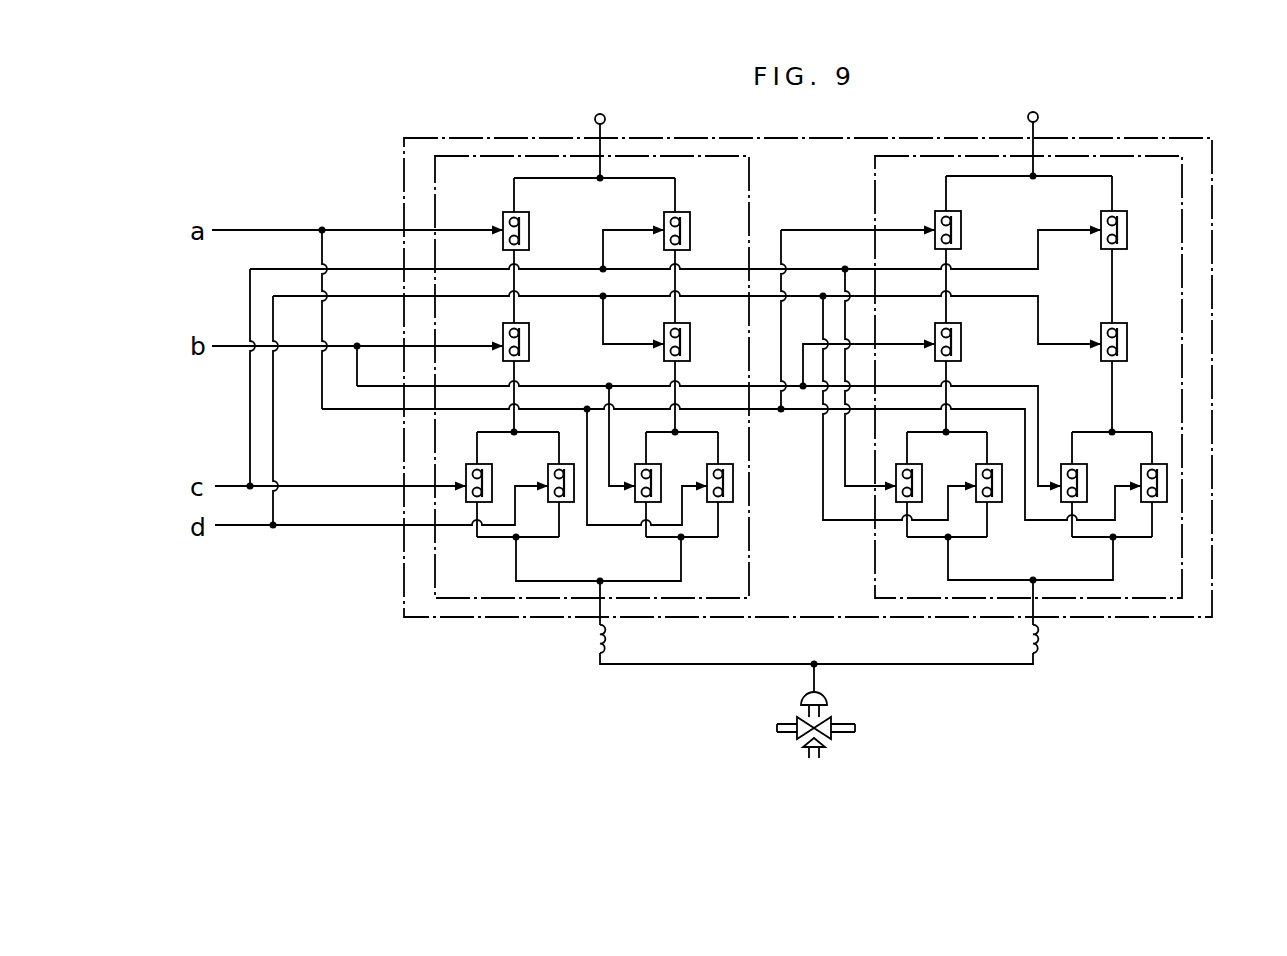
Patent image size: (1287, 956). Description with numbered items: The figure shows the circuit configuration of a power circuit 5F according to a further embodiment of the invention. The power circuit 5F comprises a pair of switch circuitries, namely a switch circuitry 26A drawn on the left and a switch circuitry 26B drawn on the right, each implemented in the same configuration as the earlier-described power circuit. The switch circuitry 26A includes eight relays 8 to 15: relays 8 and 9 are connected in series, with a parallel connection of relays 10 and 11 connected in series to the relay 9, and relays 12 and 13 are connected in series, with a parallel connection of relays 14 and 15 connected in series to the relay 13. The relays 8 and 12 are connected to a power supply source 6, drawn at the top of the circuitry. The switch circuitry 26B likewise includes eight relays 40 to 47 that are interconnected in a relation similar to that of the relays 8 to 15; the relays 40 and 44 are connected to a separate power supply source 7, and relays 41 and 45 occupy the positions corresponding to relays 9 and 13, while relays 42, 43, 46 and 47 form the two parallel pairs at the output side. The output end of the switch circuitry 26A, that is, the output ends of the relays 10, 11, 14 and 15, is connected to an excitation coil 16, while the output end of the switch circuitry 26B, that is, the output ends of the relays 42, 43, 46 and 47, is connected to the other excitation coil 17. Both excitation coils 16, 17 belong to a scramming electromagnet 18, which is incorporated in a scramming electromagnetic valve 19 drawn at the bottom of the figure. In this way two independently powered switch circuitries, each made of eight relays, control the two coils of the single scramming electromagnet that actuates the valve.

The power circuit 5F is at (1148, 134).
The power supply source 6 is at (606, 117).
The power supply source 7 is at (1039, 115).
The relay 8 is at (529, 237).
The relay 9 is at (529, 348).
The relay 10 is at (466, 468).
The relay 11 is at (548, 471).
The relay 12 is at (690, 237).
The relay 13 is at (690, 348).
The relay 14 is at (635, 468).
The relay 15 is at (707, 471).
The excitation coil 16 is at (597, 637).
The excitation coil 17 is at (1038, 637).
The scramming electromagnet 18 is at (826, 699).
The scramming electromagnetic valve 19 is at (823, 748).
The switch circuitry 26A is at (752, 197).
The switch circuitry 26B is at (1186, 197).
The relay 40 is at (961, 236).
The relay 41 is at (962, 348).
The relay 42 is at (923, 478).
The relay 43 is at (987, 463).
The relay 44 is at (1125, 237).
The relay 45 is at (1125, 348).
The relay 46 is at (1087, 478).
The relay 47 is at (1154, 463).